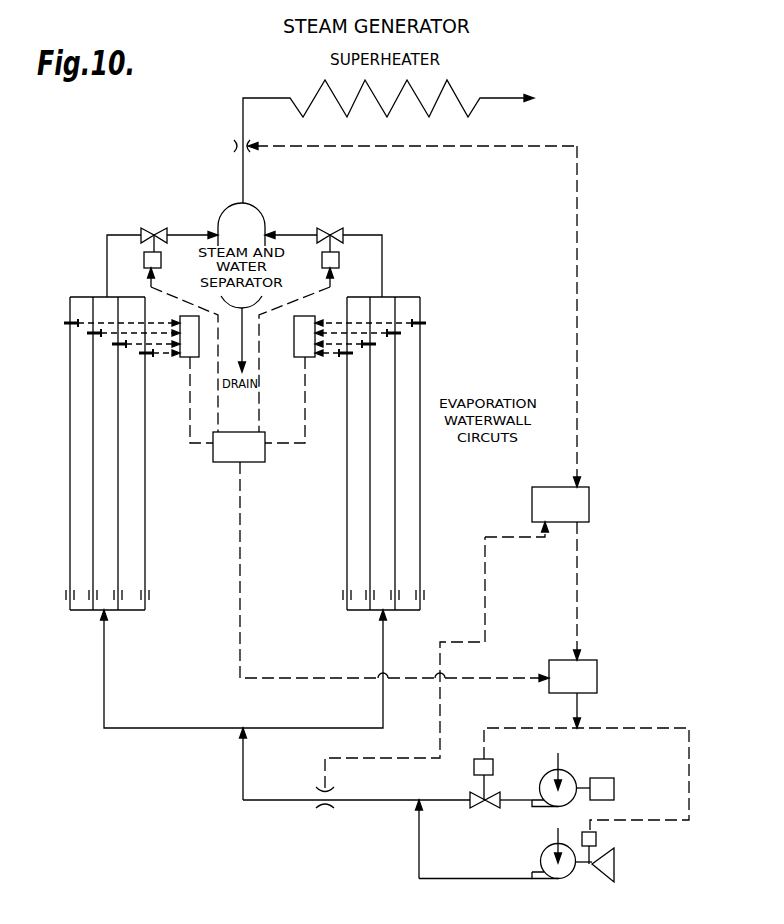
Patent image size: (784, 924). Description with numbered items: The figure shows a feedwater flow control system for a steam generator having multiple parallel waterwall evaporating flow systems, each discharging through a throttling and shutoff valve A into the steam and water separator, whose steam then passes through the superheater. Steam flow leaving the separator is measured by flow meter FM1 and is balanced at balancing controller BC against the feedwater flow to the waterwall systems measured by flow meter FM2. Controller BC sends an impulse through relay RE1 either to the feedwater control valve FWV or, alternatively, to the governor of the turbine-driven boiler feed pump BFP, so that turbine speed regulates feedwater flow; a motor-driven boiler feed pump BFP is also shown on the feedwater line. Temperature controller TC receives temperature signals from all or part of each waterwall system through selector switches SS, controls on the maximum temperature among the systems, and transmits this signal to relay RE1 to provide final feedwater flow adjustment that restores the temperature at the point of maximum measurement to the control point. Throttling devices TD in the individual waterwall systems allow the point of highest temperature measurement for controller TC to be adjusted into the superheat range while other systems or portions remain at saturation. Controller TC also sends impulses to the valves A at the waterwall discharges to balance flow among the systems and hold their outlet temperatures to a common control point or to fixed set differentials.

The flow meter FM1 is at (389, 313).
The throttling and shutoff valve A is at (244, 323).
The selector switch SS is at (245, 379).
The temperature controller TC is at (381, 557).
The throttling device TD is at (256, 595).
The balancing controller BC is at (537, 573).
The relay RE1 is at (586, 746).
The flow meter FM2 is at (399, 681).
The feedwater control valve FWV is at (499, 792).
The boiler feed pump BFP is at (550, 827).